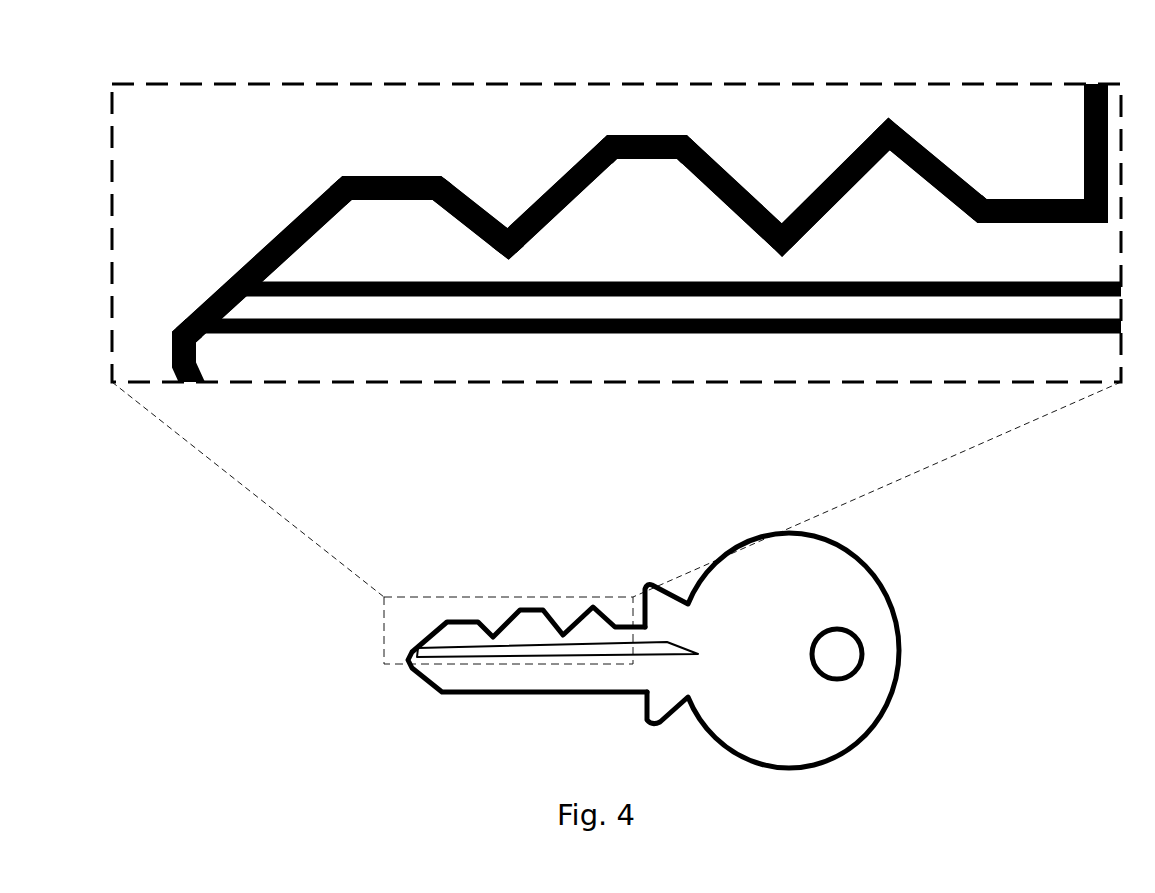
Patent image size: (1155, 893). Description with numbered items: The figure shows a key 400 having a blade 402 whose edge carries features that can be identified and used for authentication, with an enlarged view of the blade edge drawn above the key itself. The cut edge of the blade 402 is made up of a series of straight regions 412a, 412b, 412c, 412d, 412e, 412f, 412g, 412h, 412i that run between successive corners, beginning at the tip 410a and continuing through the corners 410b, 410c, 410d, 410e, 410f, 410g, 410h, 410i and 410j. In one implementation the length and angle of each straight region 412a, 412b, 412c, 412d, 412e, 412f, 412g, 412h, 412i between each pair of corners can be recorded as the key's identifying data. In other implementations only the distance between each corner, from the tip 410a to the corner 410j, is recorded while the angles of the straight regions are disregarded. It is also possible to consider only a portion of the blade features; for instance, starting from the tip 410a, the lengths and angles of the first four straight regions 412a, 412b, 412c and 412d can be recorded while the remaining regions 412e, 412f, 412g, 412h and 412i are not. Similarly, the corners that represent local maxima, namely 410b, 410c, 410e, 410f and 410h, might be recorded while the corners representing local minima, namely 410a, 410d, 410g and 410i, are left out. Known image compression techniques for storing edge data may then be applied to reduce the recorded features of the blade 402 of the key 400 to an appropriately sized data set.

The key 400 is at (708, 650).
The blade 402 is at (450, 677).
The tip 410a is at (174, 332).
The corner 410b is at (342, 176).
The corner 410c is at (442, 176).
The corner 410d is at (508, 228).
The corner 410e is at (607, 135).
The corner 410f is at (687, 135).
The corner 410g is at (782, 222).
The corner 410h is at (889, 120).
The corner 410i is at (977, 198).
The corner 410j is at (1087, 84).
The straight region 412a is at (345, 171).
The straight region 412b is at (442, 170).
The straight region 412c is at (442, 168).
The straight region 412d is at (607, 119).
The straight region 412e is at (607, 123).
The straight region 412f is at (779, 216).
The straight region 412g is at (782, 213).
The straight region 412h is at (887, 109).
The straight region 412i is at (977, 187).